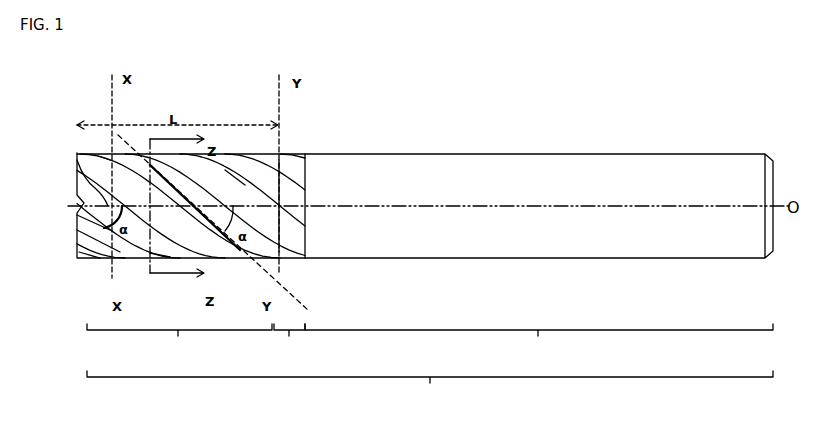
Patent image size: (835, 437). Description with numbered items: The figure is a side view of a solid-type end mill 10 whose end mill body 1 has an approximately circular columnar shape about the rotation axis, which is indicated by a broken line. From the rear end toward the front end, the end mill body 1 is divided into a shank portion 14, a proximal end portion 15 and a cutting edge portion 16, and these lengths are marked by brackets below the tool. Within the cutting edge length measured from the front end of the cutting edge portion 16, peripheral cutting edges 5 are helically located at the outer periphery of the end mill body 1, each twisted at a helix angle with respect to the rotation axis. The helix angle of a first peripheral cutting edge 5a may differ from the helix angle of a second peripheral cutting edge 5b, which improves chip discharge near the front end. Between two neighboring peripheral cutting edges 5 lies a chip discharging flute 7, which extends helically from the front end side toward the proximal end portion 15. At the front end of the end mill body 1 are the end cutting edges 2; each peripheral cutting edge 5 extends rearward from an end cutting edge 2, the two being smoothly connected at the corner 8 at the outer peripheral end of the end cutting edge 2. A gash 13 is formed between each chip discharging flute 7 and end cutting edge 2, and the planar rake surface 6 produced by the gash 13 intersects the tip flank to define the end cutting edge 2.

The end mill body 1 is at (400, 247).
The end cutting edge 2 is at (77, 242).
The peripheral cutting edge 5 is at (191, 231).
The first peripheral cutting edge 5a is at (131, 159).
The second peripheral cutting edge 5b is at (160, 254).
The rake surface 6 is at (83, 249).
The chip discharging flute 7 is at (237, 183).
The corner 8 is at (87, 259).
The end mill 10 is at (611, 128).
The gash 13 is at (80, 194).
The shank portion 14 is at (539, 222).
The proximal end portion 15 is at (289, 264).
The cutting edge portion 16 is at (166, 230).